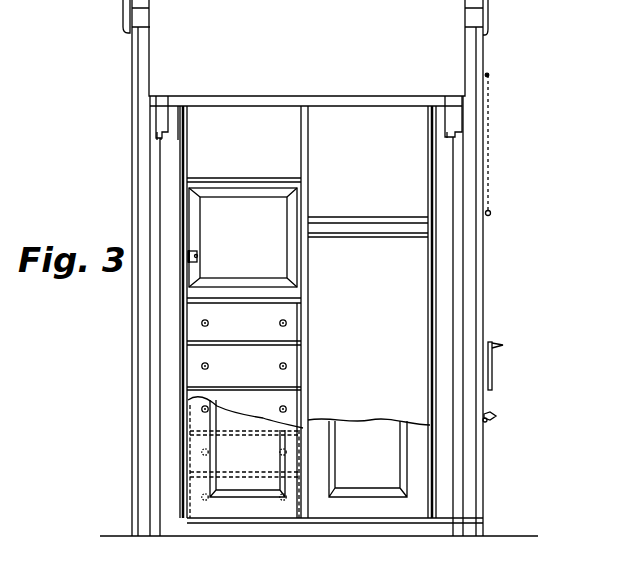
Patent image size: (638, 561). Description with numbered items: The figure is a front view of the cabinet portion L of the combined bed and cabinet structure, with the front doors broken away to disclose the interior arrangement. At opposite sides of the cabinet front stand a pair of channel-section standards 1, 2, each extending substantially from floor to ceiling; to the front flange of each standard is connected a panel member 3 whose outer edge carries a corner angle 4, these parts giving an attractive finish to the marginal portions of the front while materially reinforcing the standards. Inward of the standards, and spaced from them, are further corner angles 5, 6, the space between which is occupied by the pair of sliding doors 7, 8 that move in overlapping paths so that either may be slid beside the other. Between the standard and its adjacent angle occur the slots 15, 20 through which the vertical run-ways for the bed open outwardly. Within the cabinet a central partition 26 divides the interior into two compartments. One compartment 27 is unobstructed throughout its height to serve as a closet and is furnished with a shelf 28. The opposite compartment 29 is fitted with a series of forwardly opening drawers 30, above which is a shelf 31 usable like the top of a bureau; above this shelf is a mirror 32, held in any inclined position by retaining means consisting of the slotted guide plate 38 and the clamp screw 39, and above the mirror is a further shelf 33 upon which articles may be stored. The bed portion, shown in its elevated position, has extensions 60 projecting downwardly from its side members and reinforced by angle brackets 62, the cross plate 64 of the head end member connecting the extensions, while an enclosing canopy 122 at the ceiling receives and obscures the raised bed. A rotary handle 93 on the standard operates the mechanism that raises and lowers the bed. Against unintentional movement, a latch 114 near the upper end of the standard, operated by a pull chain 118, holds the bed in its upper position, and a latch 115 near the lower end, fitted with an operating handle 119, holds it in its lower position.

The enclosing canopy 122 is at (307, 61).
The cross plate 64 is at (382, 97).
The extension 60 is at (156, 108).
The angle bracket 62 is at (160, 127).
The latch 114 is at (489, 75).
The pull chain 118 is at (489, 160).
The compartment 29 is at (193, 160).
The slot 15 is at (170, 420).
The corner angle 5 is at (178, 282).
The panel member 3 is at (144, 311).
The corner angle 4 is at (133, 341).
The standard 1 is at (158, 379).
The corner angle 6 is at (435, 282).
The standard 2 is at (462, 330).
The central partition 26 is at (302, 170).
The shelf 33 is at (238, 181).
The shelf 28 is at (358, 218).
The shelf 31 is at (290, 298).
The mirror 32 is at (243, 237).
The clamp screw 39 is at (198, 256).
The slotted guide plate 38 is at (199, 259).
The drawer 30 is at (292, 333).
The sliding door 7 is at (263, 492).
The sliding door 8 is at (369, 469).
The compartment 27 is at (387, 280).
The cabinet portion L is at (417, 312).
The slot 20 is at (445, 503).
The rotary handle 93 is at (504, 346).
The operating handle 119 is at (494, 416).
The latch 115 is at (487, 422).